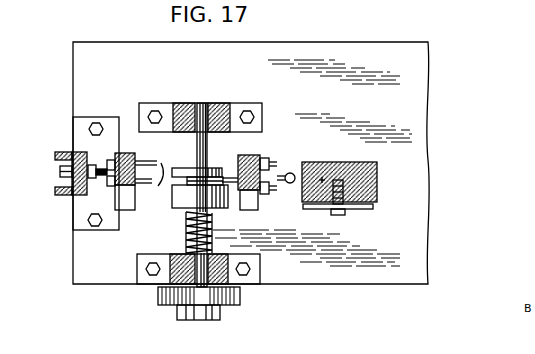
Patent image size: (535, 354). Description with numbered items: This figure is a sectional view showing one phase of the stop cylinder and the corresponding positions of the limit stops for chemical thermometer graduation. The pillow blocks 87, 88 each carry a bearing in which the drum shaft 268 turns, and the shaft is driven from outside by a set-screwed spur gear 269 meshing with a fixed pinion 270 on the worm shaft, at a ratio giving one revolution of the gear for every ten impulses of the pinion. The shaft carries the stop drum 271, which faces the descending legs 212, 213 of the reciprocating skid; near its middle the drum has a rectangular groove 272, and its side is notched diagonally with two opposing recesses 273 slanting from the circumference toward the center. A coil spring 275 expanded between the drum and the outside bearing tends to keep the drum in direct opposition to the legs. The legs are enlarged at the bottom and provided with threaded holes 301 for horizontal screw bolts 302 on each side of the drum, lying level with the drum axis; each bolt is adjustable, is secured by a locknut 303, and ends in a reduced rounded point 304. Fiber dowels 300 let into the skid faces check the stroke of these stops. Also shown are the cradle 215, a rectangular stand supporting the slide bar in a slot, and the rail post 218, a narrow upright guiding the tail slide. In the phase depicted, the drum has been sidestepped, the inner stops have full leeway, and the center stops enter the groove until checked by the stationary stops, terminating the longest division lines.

The pillow block 87 is at (150, 105).
The pillow block 88 is at (148, 284).
The descending leg 212 is at (258, 211).
The descending leg 213 is at (115, 197).
The cradle 215 is at (367, 182).
The rail post 218 is at (82, 140).
The drum shaft 268 is at (203, 105).
The spur gear 269 is at (224, 306).
The pinion 270 is at (237, 288).
The drum 271 is at (226, 208).
The rectangular groove 272 is at (172, 187).
The recess 273 is at (180, 168).
The coil spring 275 is at (203, 219).
The fiber dowel 300 is at (105, 179).
The threaded hole 301 is at (130, 197).
The screw bolt 302 is at (60, 171).
The locknut 303 is at (238, 153).
The rounded point 304 is at (161, 163).